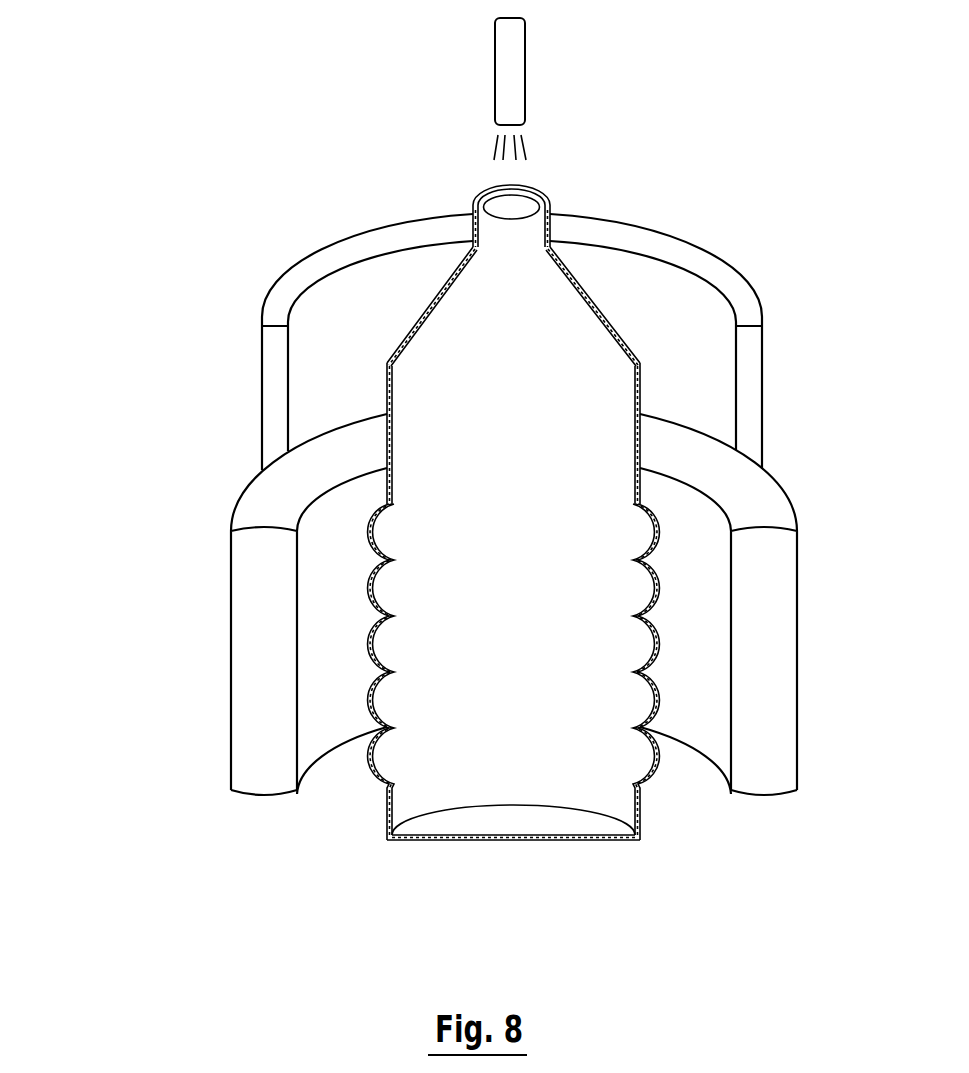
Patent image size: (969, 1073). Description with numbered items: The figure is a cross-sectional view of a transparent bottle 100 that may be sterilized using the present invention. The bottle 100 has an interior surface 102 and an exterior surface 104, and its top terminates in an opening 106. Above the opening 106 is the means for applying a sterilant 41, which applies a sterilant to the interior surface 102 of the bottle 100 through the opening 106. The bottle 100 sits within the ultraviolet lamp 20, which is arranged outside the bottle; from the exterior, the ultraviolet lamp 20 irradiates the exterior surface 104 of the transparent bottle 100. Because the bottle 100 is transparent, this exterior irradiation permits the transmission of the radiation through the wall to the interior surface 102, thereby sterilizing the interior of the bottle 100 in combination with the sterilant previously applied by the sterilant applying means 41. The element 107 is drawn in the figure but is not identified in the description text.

The ultraviolet lamp 20 is at (230, 705).
The means for applying a sterilant 41 is at (497, 72).
The bottle 100 is at (427, 203).
The interior surface 102 is at (538, 420).
The exterior surface 104 is at (619, 447).
The opening 106 is at (517, 210).
The upper retaining ring 107 is at (260, 360).